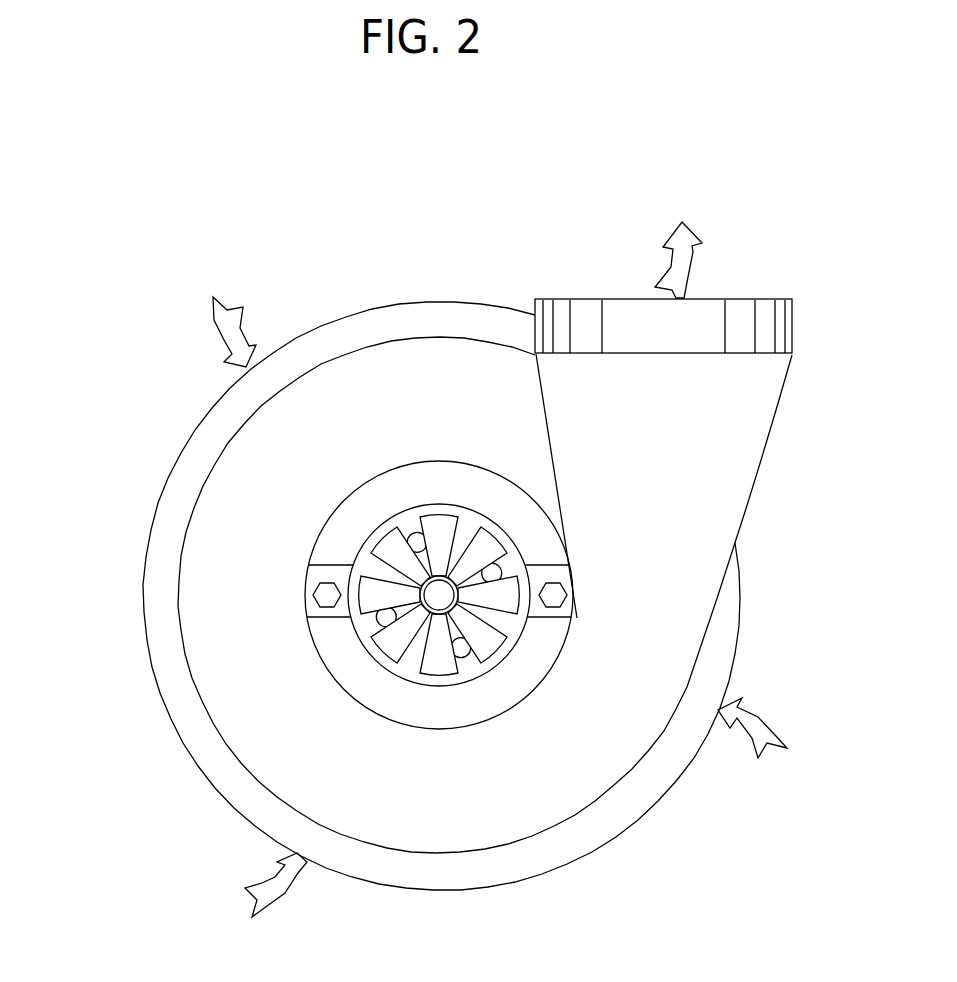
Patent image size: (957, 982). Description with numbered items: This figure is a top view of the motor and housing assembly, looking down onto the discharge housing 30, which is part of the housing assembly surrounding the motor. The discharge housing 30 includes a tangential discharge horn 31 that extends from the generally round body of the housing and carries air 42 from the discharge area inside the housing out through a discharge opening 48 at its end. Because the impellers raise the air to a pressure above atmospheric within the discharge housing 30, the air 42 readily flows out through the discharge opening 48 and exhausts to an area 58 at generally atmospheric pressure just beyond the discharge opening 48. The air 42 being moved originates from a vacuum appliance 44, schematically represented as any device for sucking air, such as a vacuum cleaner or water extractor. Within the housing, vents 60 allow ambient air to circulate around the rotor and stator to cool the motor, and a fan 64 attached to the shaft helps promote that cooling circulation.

The area 58 is at (661, 181).
The discharge housing 30 is at (197, 483).
The tangential discharge horn 31 is at (777, 412).
The air 42 is at (665, 274).
The vacuum appliance 44 is at (141, 587).
The discharge opening 48 is at (739, 299).
The vents 60 is at (417, 536).
The fan 64 is at (380, 540).